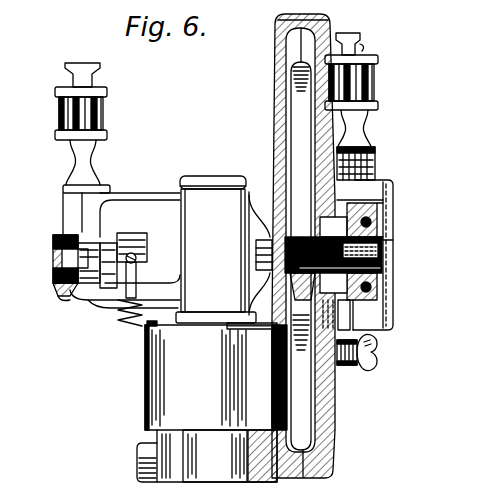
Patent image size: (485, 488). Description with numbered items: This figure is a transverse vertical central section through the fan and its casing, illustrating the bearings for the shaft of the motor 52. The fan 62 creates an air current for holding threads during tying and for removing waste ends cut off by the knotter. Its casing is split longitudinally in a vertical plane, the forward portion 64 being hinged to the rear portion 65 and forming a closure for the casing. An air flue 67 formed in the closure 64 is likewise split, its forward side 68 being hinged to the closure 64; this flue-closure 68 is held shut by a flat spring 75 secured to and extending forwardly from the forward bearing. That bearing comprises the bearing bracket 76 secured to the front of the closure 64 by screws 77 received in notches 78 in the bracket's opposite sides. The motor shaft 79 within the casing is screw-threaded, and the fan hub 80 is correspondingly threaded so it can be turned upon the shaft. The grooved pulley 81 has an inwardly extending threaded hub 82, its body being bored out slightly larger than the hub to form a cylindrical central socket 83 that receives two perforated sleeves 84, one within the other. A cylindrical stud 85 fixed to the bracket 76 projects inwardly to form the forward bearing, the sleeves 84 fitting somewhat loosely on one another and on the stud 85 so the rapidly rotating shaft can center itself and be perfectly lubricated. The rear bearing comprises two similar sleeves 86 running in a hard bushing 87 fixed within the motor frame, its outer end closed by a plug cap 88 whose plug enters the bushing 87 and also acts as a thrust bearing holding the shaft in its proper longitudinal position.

The motor 52 is at (166, 272).
The fan 62 is at (300, 97).
The forward portion 64 is at (318, 30).
The rear portion 65 is at (281, 48).
The air flue 67 is at (352, 222).
The forward side 68 is at (338, 228).
The flat spring 75 is at (380, 252).
The bearing bracket 76 is at (388, 225).
The screws 77 is at (373, 356).
The notches 78 is at (346, 366).
The motor shaft 79 is at (277, 260).
The fan hub 80 is at (355, 330).
The grooved pulley 81 is at (350, 284).
The hub 82 is at (346, 300).
The cylindrical central socket 83 is at (396, 240).
The perforated sleeves 84 is at (338, 268).
The cylindrical stud 85 is at (340, 256).
The sleeves 86 is at (65, 285).
The hard bushing 87 is at (73, 286).
The plug cap 88 is at (53, 258).